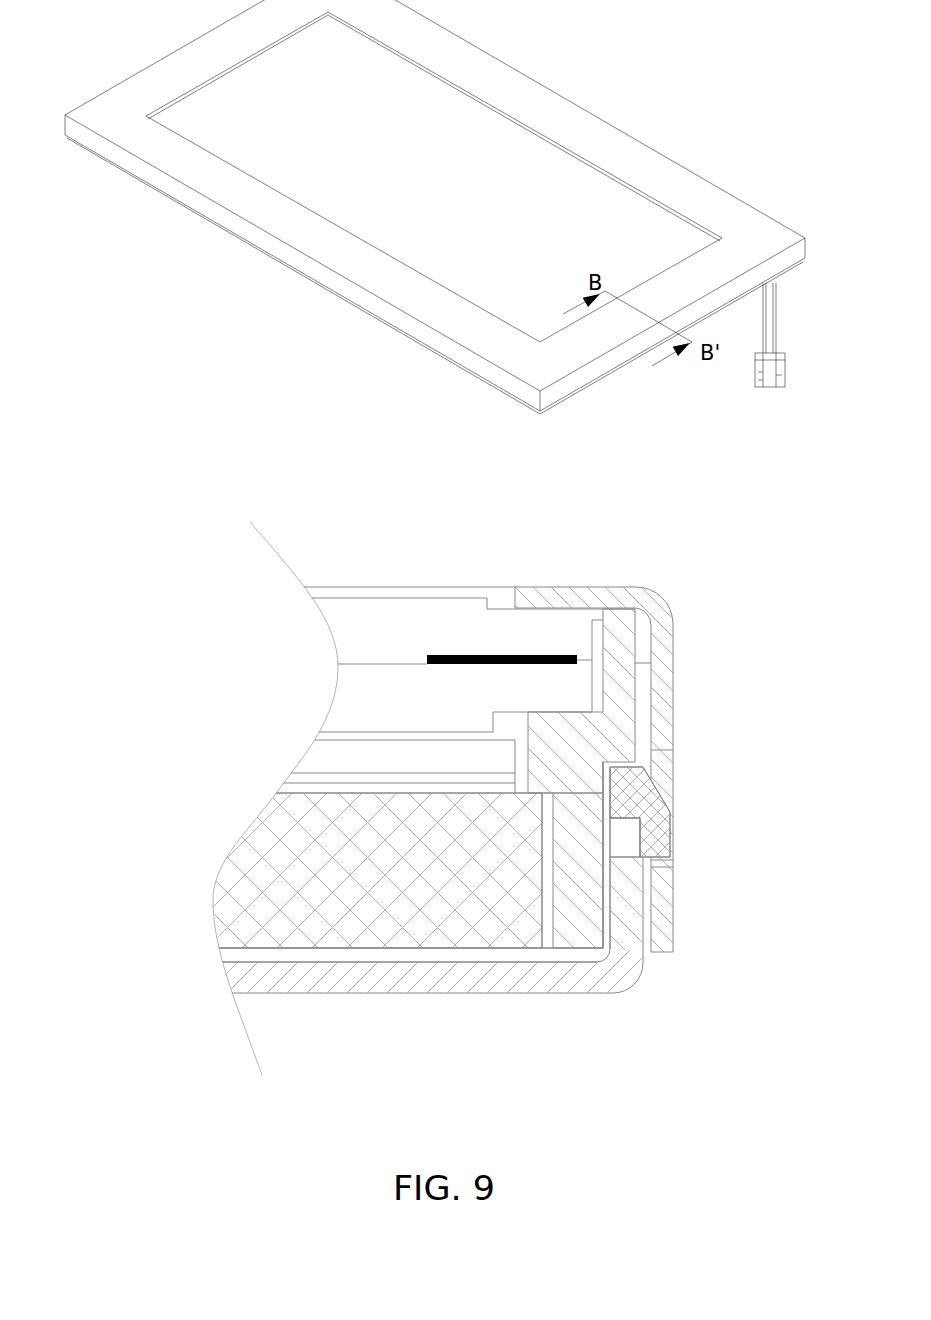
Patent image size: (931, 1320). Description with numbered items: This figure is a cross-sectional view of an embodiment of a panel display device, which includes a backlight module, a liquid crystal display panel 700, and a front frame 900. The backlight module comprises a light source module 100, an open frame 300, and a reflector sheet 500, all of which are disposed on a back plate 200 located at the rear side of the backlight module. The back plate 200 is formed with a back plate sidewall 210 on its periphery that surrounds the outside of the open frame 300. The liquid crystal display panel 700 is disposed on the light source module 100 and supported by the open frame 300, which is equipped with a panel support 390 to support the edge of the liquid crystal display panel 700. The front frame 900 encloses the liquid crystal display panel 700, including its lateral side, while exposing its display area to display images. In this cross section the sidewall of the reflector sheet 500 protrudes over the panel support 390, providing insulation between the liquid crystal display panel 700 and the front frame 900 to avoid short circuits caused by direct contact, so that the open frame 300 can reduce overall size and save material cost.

The light source module 100 is at (210, 958).
The back plate 200 is at (347, 982).
The back plate sidewall 210 is at (635, 888).
The open frame 300 is at (580, 823).
The panel support 390 is at (548, 722).
The reflector sheet 500 is at (468, 953).
The liquid crystal display panel 700 is at (425, 620).
The front frame 900 is at (655, 608).